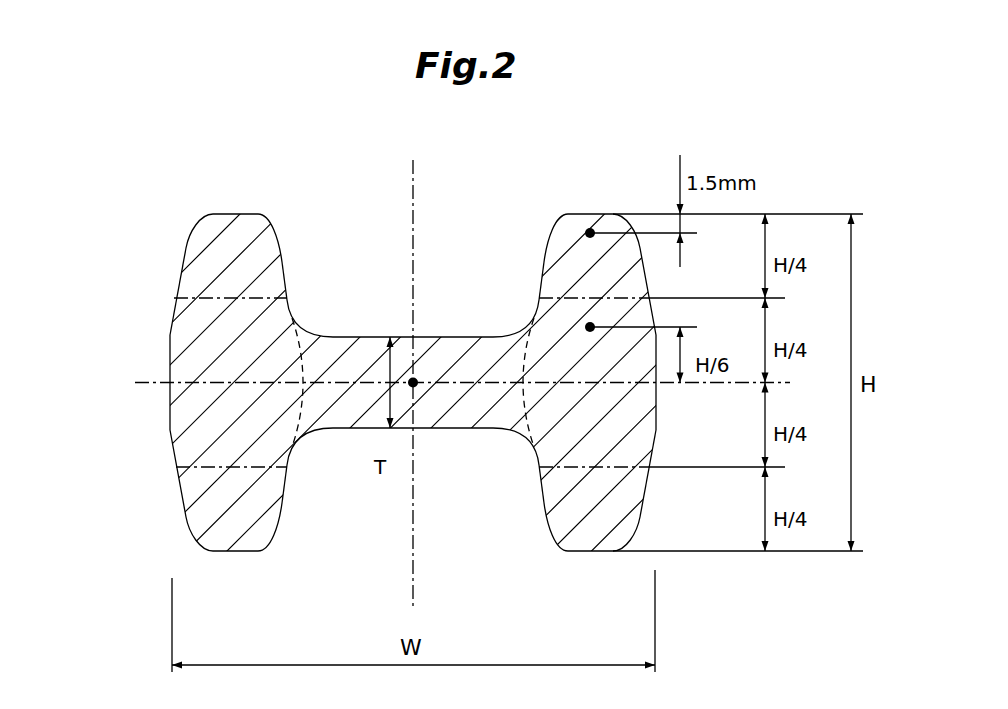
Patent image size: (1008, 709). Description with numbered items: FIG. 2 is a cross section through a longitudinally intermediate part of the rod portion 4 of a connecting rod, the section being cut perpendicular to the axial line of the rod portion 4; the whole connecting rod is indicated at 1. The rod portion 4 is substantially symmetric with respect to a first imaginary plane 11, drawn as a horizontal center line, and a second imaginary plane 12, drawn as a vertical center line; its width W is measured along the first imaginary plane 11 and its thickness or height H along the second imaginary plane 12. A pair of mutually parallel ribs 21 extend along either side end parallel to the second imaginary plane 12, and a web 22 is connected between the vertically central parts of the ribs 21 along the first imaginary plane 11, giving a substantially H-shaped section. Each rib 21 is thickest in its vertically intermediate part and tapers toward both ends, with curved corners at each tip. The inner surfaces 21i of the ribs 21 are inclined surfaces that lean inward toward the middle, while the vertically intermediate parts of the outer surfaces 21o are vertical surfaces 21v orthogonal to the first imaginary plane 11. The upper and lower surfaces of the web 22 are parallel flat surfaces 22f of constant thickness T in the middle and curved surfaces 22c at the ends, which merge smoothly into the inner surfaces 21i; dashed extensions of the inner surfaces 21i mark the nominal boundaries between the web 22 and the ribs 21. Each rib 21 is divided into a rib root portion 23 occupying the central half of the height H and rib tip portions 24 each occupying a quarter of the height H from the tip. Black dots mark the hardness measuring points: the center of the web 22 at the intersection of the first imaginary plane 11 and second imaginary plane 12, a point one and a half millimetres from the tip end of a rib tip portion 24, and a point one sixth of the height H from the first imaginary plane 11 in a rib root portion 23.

The stabilizer / structural member cross-section 1 is at (656, 120).
The rod portion 4 is at (197, 214).
The first imaginary plane 11 is at (143, 382).
The second imaginary plane 12 is at (410, 178).
The rib 21 is at (553, 262).
The inner surface 21i is at (288, 273).
The outer surface 21o is at (178, 498).
The vertical surface 21v is at (172, 420).
The web 22 is at (372, 345).
The curved surface 22c is at (308, 322).
The flat surface 22f is at (450, 337).
The rib root portion 23 is at (181, 328).
The rib tip portion 24 is at (230, 218).